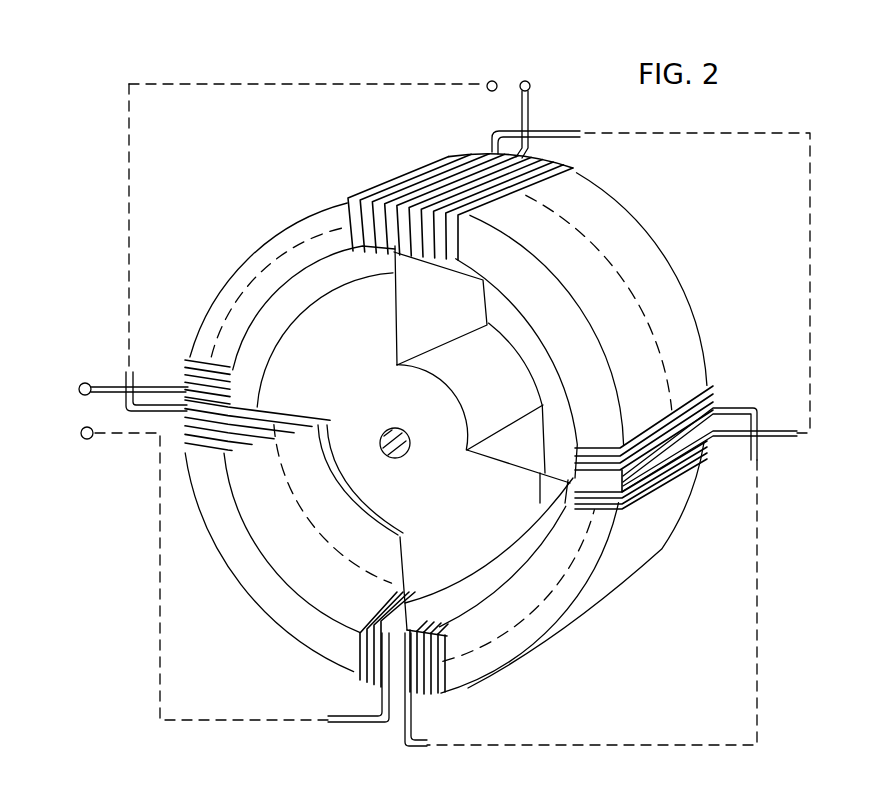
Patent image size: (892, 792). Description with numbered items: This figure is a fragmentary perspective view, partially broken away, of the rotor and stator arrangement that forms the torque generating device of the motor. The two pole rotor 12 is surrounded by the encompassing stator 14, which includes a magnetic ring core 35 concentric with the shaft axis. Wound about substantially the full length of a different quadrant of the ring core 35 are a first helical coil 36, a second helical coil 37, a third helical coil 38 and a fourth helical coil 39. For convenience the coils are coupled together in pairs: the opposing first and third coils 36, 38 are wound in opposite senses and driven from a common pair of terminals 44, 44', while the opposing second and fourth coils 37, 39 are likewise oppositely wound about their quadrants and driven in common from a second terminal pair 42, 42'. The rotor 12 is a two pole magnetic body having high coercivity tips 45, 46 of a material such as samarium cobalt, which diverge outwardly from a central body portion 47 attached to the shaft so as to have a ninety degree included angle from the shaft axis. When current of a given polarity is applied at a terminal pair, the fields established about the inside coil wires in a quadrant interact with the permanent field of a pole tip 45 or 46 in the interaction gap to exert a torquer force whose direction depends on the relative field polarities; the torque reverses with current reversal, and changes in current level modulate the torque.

The two pole rotor 12 is at (350, 493).
The stator 14 is at (646, 558).
The magnetic ring core 35 is at (663, 266).
The first helical coil 36 is at (575, 178).
The second helical coil 37 is at (680, 473).
The third helical coil 38 is at (355, 677).
The fourth helical coil 39 is at (192, 360).
The terminal 42 is at (118, 391).
The terminal 42' is at (70, 434).
The terminal 44 is at (536, 119).
The terminal 44' is at (531, 107).
The high coercivity tip 45 is at (317, 283).
The high coercivity tip 46 is at (493, 588).
The central body portion 47 is at (432, 410).